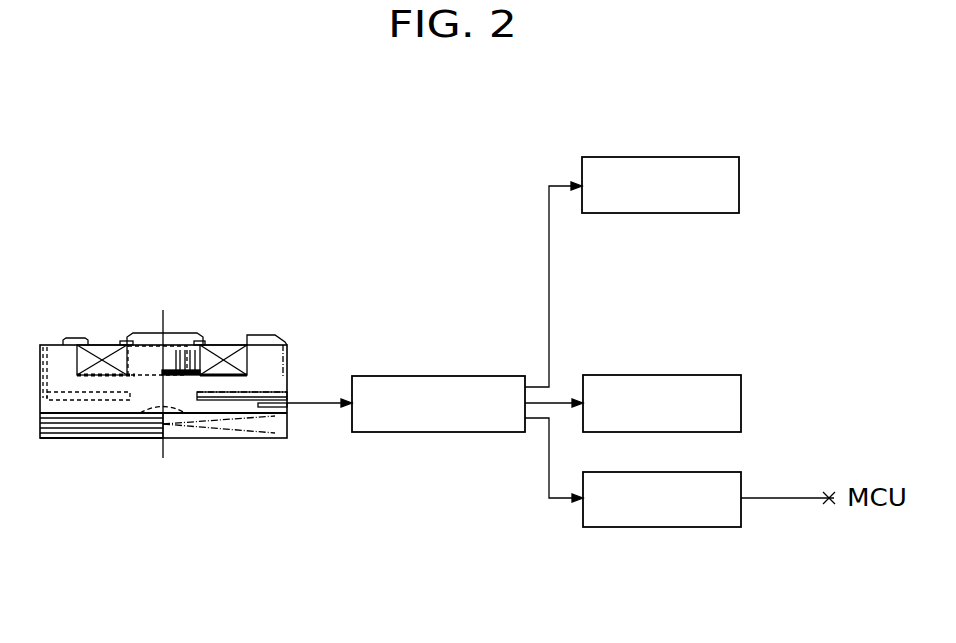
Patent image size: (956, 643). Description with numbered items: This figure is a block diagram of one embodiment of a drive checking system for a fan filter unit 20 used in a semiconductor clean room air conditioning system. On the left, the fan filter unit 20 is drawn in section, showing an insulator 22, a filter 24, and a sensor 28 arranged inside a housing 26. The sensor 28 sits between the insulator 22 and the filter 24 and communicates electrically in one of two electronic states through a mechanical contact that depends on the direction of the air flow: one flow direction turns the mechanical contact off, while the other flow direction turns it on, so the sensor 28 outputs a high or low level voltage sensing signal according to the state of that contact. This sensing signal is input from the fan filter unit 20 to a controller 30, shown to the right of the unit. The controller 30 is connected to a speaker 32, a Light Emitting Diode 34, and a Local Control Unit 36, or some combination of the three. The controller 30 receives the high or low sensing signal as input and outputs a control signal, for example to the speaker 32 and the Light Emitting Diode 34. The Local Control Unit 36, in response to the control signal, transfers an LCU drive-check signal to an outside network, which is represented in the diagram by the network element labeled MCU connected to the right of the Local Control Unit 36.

The fan filter unit 20 is at (262, 297).
The insulator 22 is at (270, 394).
The filter 24 is at (232, 431).
The housing 26 is at (289, 351).
The sensor 28 is at (277, 414).
The controller 30 is at (435, 432).
The speaker 32 is at (739, 183).
The Light Emitting Diode 34 is at (741, 400).
The Local Control Unit 36 is at (665, 527).